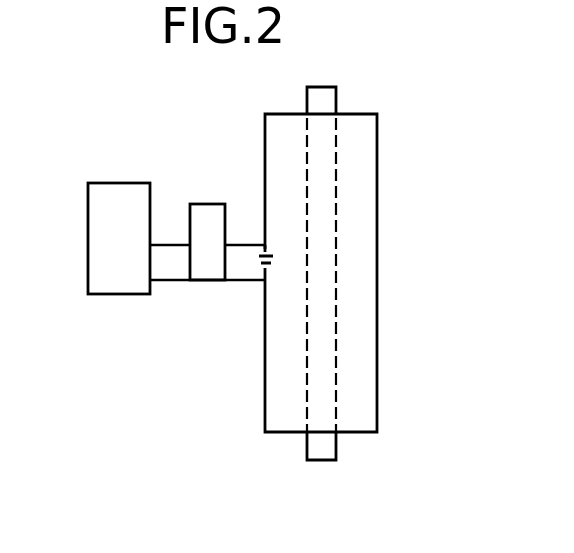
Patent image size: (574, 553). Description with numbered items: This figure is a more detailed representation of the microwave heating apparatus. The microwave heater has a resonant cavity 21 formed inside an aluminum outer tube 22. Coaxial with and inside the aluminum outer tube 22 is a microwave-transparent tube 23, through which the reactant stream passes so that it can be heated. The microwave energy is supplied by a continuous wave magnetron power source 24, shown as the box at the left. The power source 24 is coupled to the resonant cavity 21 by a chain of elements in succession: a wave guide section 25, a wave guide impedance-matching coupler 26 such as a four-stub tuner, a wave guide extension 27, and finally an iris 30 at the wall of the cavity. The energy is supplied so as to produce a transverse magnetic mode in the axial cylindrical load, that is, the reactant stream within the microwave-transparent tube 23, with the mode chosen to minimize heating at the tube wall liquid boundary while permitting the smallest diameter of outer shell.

The resonant cavity 21 is at (362, 172).
The aluminum outer tube 22 is at (378, 270).
The microwave-transparent tube 23 is at (336, 450).
The continuous wave magnetron power source 24 is at (112, 183).
The wave guide section 25 is at (174, 281).
The wave guide impedance-matching coupler 26 is at (207, 204).
The wave guide extension 27 is at (246, 281).
The iris 30 is at (262, 262).